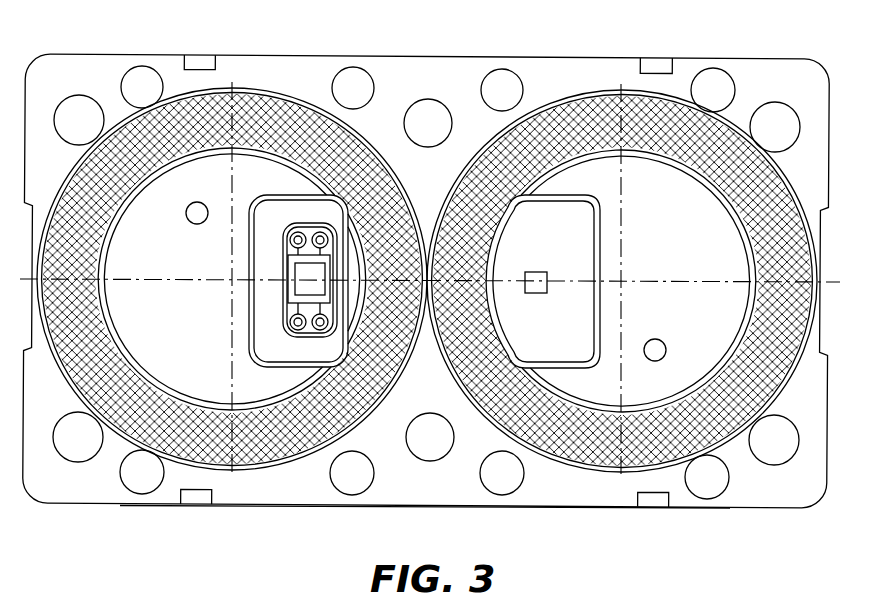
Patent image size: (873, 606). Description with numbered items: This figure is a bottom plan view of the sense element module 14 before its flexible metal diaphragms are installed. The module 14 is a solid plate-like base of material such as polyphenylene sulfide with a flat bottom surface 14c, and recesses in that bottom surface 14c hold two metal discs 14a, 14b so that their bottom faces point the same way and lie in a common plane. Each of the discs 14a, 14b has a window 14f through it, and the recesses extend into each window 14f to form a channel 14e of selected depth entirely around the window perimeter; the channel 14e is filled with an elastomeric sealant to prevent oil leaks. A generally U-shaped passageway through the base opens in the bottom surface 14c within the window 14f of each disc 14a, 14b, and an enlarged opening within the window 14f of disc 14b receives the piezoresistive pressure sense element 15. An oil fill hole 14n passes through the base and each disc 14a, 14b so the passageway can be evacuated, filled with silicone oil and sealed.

The sense element module 14 is at (603, 515).
The metal disc 14a is at (688, 220).
The metal disc 14b is at (200, 378).
The flat bottom surface 14c is at (268, 478).
The channel 14e is at (273, 120).
The window 14f is at (277, 252).
The oil fill hole 14n is at (187, 214).
The piezoresistive element 15 is at (284, 298).